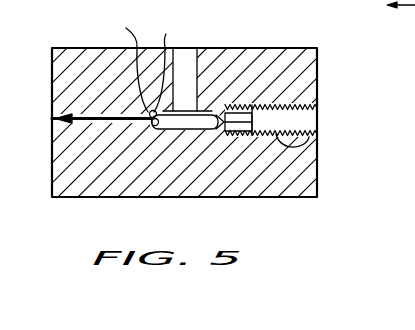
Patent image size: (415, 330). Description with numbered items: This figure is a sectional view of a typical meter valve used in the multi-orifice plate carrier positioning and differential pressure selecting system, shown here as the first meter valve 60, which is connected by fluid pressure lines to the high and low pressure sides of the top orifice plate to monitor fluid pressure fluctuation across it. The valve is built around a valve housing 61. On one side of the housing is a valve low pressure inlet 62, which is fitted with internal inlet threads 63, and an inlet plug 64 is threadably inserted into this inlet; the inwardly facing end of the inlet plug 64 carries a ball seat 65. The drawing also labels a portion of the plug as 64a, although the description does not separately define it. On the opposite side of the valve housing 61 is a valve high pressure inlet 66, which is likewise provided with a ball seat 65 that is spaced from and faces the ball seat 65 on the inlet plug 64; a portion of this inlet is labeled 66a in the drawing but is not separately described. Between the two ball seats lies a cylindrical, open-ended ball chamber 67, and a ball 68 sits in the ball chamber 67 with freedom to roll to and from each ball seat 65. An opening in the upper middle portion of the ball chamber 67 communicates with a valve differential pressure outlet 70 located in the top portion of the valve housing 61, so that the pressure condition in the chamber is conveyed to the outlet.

The first meter valve 60 is at (288, 47).
The valve housing 61 is at (262, 48).
The valve low pressure inlet 62 is at (316, 121).
The internal inlet threads 63 is at (309, 139).
The inlet plug 64 is at (248, 110).
The lower thread 64a is at (236, 133).
The ball seat 65 is at (213, 112).
The valve high pressure inlet 66 is at (52, 122).
The rod tip 66a is at (66, 116).
The ball chamber 67 is at (153, 63).
The ball 68 is at (121, 63).
The valve differential pressure outlet 70 is at (189, 41).